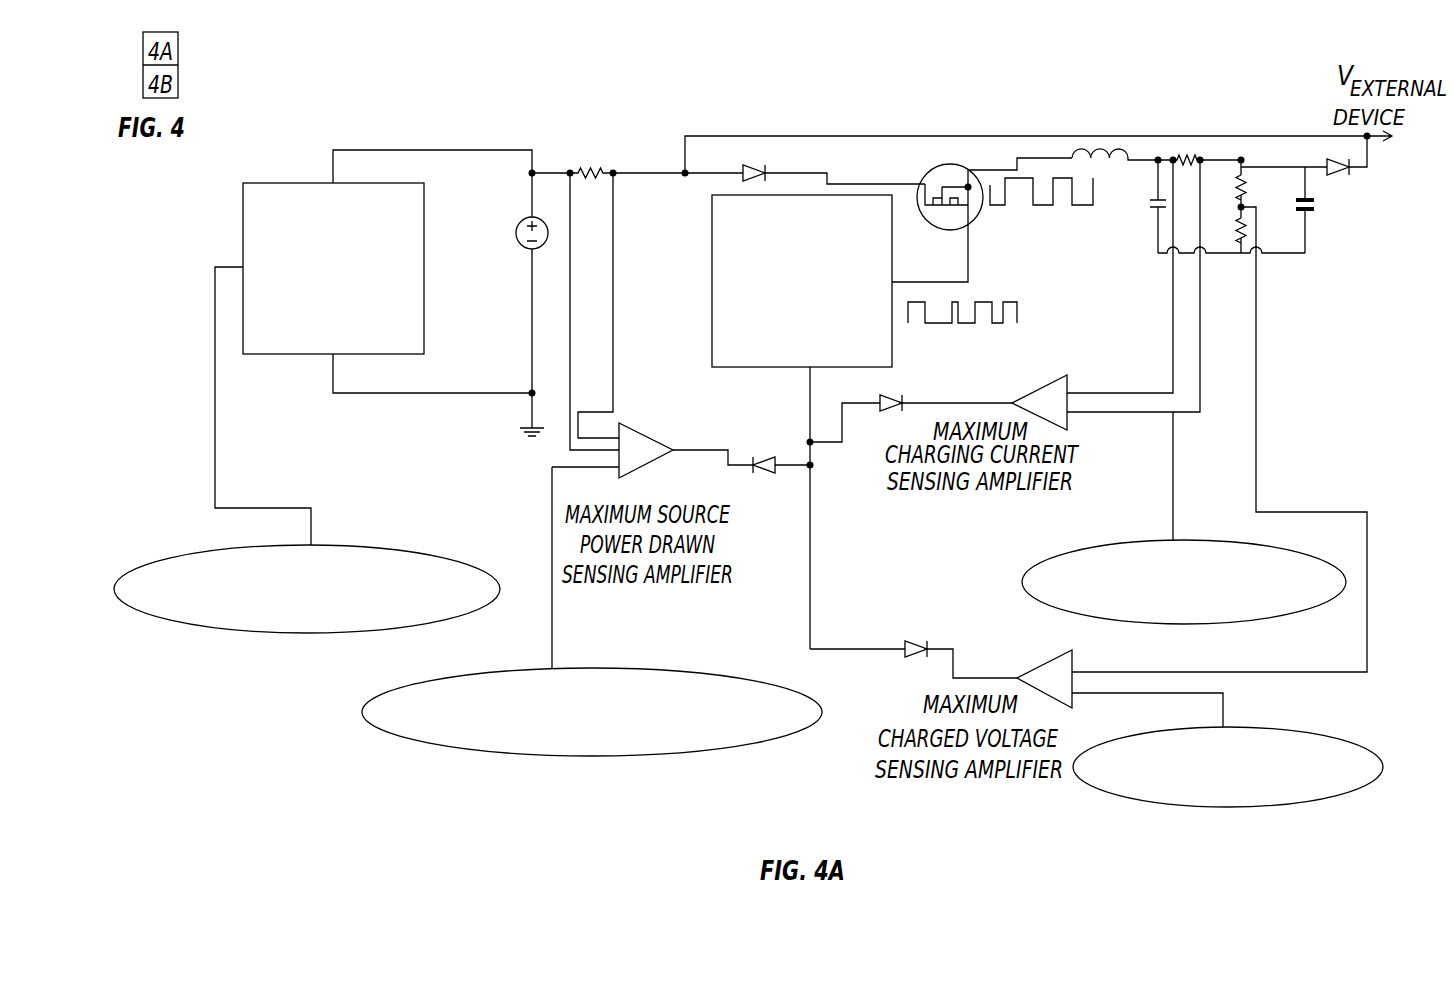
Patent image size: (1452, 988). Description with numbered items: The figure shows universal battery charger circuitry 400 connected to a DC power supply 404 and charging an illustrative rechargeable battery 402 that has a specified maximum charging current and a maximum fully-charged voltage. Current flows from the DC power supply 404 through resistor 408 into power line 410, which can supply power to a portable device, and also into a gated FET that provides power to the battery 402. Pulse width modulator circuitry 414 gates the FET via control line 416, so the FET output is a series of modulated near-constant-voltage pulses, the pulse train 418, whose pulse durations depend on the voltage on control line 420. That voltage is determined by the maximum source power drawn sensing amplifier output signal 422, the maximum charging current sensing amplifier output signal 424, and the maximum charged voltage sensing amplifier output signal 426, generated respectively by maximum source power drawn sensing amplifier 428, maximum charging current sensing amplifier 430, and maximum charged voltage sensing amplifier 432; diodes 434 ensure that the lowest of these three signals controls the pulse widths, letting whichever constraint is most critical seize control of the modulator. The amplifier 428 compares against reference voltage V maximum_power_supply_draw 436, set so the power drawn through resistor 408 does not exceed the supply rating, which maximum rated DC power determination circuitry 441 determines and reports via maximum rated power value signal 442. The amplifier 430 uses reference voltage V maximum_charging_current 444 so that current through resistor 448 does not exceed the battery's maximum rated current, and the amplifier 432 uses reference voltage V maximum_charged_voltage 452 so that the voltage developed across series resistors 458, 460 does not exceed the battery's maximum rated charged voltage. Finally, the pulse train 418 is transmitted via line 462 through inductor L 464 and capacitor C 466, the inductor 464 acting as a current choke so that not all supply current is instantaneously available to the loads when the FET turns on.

The universal battery charger circuitry 400 is at (1187, 105).
The rechargeable battery 402 is at (1310, 215).
The DC power supply 404 is at (518, 215).
The resistor 408 is at (590, 160).
The power line 410 is at (900, 136).
The pulse width modulator circuitry 414 is at (883, 362).
The control line 416 is at (968, 282).
The modulated pulse train 418 is at (1052, 221).
The control line 420 is at (808, 407).
The maximum source power drawn sensing amplifier output signal 422 is at (722, 455).
The maximum charging current sensing amplifier output signal 424 is at (972, 403).
The maximum charged voltage sensing amplifier output signal 426 is at (938, 645).
The maximum source power drawn sensing amplifier 428 is at (640, 425).
The maximum charging current sensing amplifier 430 is at (1043, 383).
The maximum charged voltage sensing amplifier 432 is at (1030, 668).
The diodes 434 is at (770, 457).
The voltage V maximum_power_supply_draw 436 is at (518, 668).
The maximum rated DC power determination circuitry 441 is at (312, 180).
The maximum rated power value signal 442 is at (288, 542).
The voltage V maximum_charging_current 444 is at (1082, 612).
The resistor 448 is at (1190, 158).
The voltage V maximum_charged_voltage 452 is at (1275, 715).
The resistor 458 is at (1245, 235).
The resistor 460 is at (1248, 180).
The line 462 is at (1043, 158).
The inductor L 464 is at (1102, 162).
The capacitor C 466 is at (1152, 208).